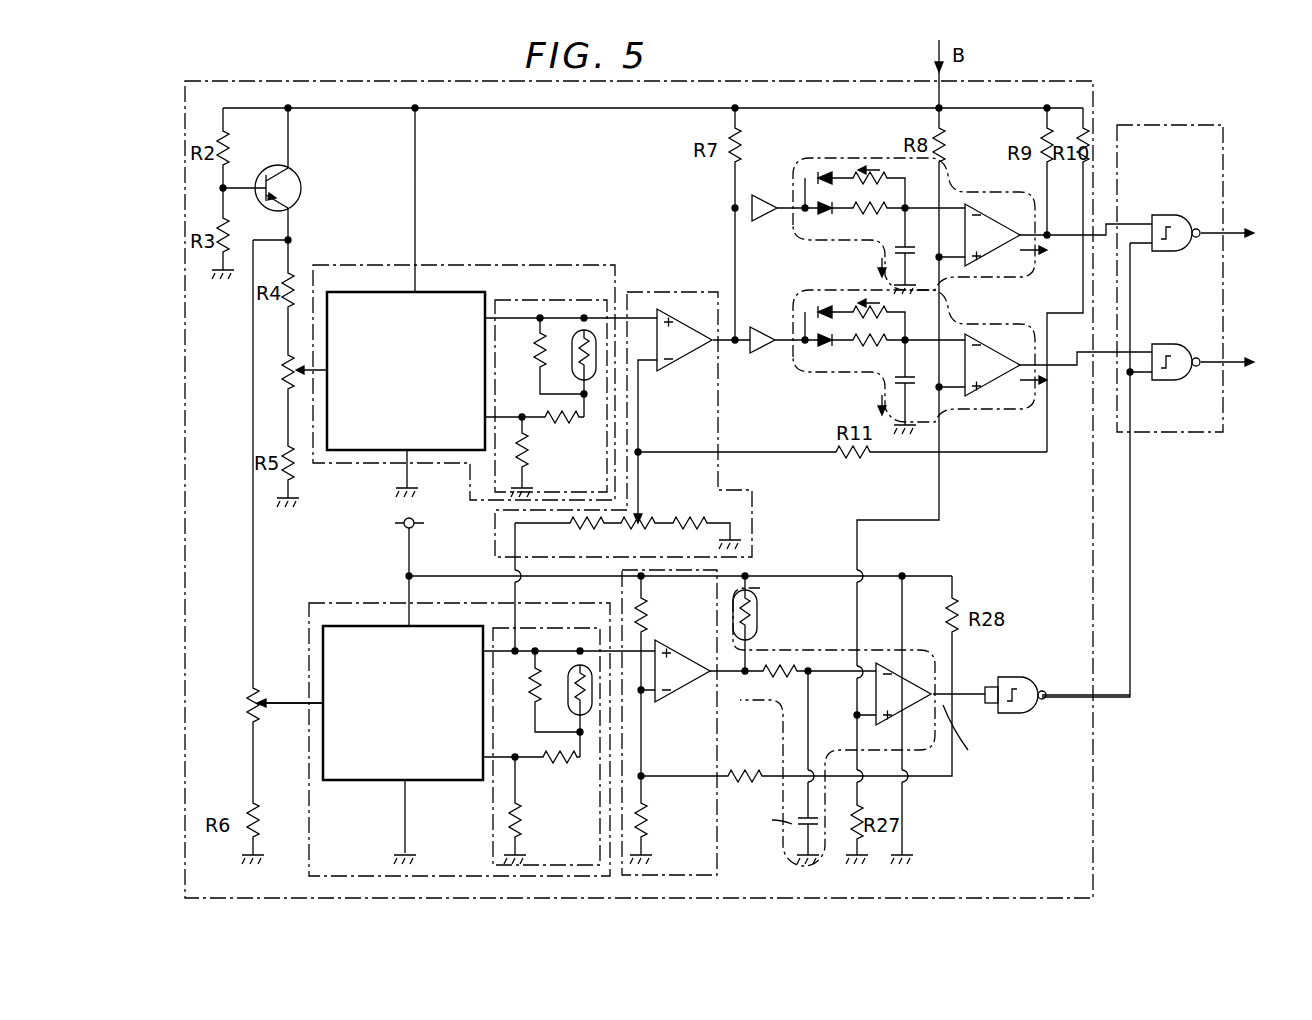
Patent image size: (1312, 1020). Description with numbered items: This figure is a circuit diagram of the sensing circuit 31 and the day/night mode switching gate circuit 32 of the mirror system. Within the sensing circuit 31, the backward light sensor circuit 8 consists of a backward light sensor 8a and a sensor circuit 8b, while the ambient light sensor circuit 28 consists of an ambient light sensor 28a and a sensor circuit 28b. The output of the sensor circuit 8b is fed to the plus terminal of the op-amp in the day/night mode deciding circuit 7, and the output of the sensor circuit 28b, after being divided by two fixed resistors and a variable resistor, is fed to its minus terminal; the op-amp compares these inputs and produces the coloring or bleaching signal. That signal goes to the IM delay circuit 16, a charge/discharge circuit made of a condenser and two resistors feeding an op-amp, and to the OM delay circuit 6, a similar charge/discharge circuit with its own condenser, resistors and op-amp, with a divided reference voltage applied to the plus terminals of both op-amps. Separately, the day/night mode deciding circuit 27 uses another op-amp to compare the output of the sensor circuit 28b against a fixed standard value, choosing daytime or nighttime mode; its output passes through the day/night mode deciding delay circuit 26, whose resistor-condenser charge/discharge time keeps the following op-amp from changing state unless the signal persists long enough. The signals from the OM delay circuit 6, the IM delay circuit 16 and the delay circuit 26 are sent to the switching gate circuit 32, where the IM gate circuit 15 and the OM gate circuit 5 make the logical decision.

The OM gate circuit 5 is at (1165, 213).
The OM delay circuit 6 is at (948, 190).
The day/night mode deciding circuit 7 is at (662, 290).
The backward light sensor circuit 8 is at (540, 262).
The backward light sensor 8a is at (450, 292).
The sensor circuit 8b is at (590, 300).
The IM gate circuit 15 is at (1163, 343).
The IM delay circuit 16 is at (954, 326).
The day/night mode deciding delay circuit 26 is at (808, 650).
The day/night mode deciding circuit 27 is at (715, 830).
The ambient light sensor circuit 28 is at (324, 602).
The ambient light sensor 28a is at (360, 626).
The sensor circuit 28b is at (528, 628).
The sensing circuit 31 is at (185, 269).
The day/night mode switching gate circuit 32 is at (1140, 124).